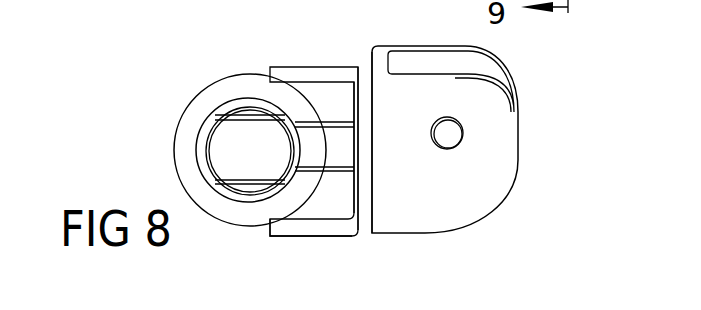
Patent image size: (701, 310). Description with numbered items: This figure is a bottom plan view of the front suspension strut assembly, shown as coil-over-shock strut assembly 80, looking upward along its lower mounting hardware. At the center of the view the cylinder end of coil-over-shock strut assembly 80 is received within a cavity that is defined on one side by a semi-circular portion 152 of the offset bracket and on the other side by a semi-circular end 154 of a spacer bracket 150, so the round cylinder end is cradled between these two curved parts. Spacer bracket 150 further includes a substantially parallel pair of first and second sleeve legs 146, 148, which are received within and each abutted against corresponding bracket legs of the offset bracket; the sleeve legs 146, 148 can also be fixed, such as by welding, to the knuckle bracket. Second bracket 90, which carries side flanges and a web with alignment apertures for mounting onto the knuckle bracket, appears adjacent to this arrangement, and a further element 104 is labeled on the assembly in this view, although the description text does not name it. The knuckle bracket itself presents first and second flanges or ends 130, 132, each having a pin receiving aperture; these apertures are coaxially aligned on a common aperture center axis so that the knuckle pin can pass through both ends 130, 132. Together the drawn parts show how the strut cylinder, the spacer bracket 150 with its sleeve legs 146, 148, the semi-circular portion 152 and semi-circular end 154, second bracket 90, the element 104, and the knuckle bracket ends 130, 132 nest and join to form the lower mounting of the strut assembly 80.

The coil-over-shock strut assembly 80 is at (540, 94).
The second bracket 90 is at (323, 237).
The ring 104 is at (185, 143).
The first flange or end 130 is at (445, 60).
The second flange or end 132 is at (460, 175).
The first sleeve leg 146 is at (326, 150).
The second sleeve leg 148 is at (340, 136).
The spacer bracket 150 is at (342, 126).
The semi-circular portion 152 is at (223, 107).
The semi-circular end 154 is at (326, 150).